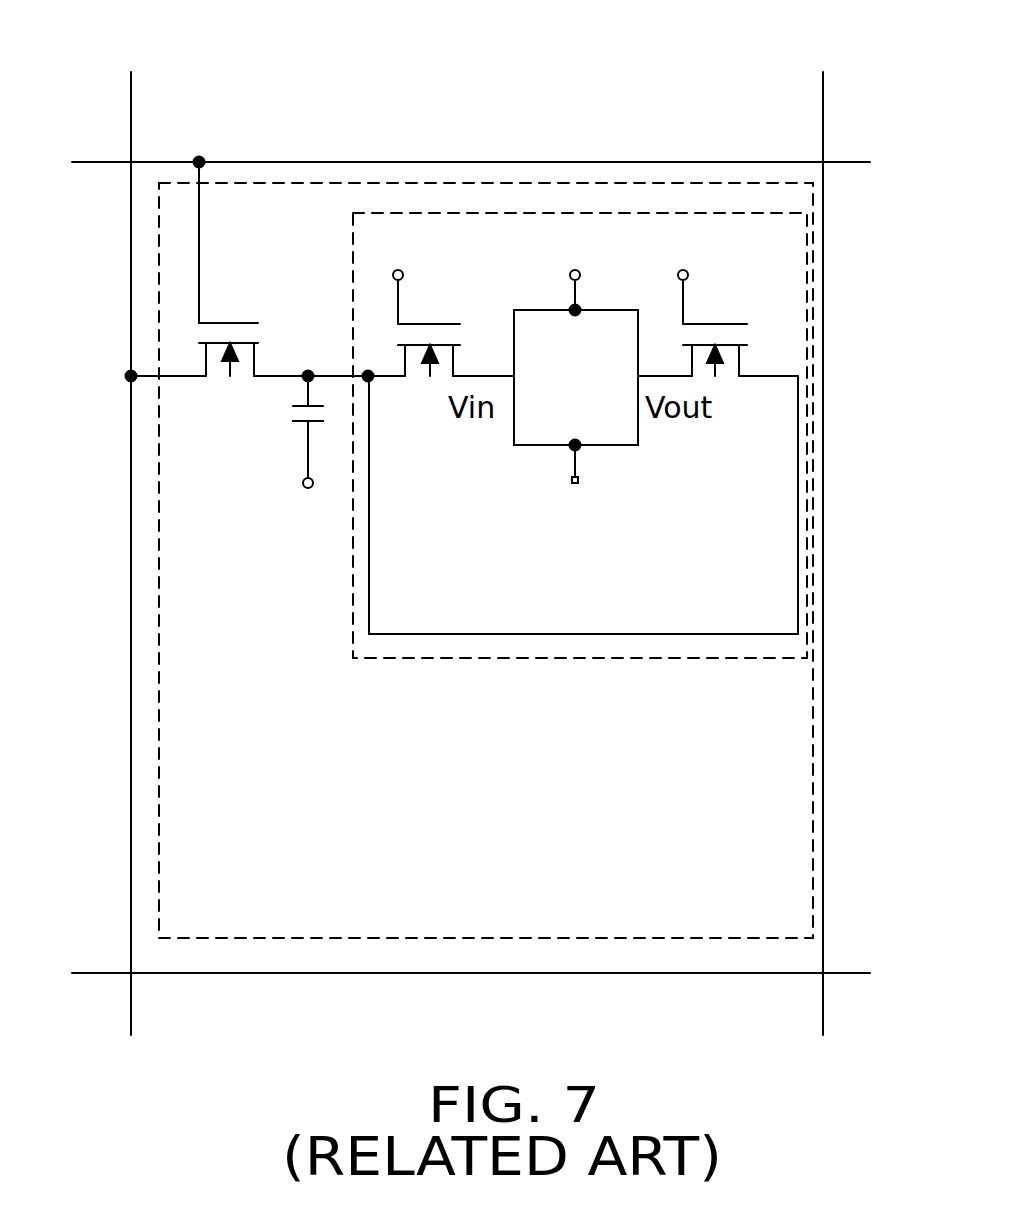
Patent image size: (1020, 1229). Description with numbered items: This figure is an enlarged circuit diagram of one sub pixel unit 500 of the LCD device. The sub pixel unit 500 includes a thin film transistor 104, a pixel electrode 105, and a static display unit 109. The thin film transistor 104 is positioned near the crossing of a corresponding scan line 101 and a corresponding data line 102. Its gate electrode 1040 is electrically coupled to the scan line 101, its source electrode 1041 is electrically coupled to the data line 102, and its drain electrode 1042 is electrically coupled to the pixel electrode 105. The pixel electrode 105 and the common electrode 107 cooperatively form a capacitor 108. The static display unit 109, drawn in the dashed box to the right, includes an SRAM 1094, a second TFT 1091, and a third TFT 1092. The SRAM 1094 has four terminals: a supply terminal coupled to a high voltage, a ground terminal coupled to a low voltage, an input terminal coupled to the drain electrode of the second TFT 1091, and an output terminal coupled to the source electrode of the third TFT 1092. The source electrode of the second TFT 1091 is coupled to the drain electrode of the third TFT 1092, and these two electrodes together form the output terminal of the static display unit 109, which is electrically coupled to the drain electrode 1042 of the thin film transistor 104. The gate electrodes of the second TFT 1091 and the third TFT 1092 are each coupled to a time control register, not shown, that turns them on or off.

The scan line 101 is at (315, 162).
The data line 102 is at (131, 115).
The thin film transistor 104 is at (203, 337).
The gate electrode 1040 is at (199, 265).
The source electrode 1041 is at (180, 375).
The drain electrode 1042 is at (275, 375).
The pixel electrode 105 is at (300, 407).
The common electrode 107 is at (304, 490).
The capacitor 108 is at (293, 414).
The static display unit 109 is at (410, 660).
The second TFT 1091 is at (428, 310).
The third TFT 1092 is at (700, 310).
The SRAM 1094 is at (598, 310).
The sub pixel unit 500 is at (545, 183).